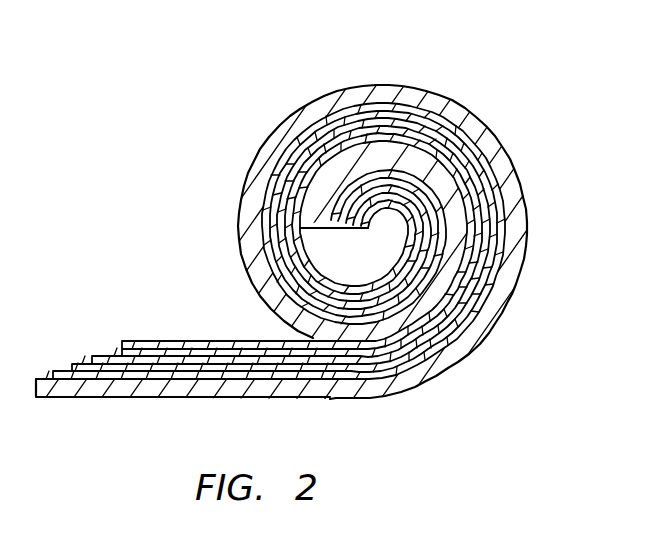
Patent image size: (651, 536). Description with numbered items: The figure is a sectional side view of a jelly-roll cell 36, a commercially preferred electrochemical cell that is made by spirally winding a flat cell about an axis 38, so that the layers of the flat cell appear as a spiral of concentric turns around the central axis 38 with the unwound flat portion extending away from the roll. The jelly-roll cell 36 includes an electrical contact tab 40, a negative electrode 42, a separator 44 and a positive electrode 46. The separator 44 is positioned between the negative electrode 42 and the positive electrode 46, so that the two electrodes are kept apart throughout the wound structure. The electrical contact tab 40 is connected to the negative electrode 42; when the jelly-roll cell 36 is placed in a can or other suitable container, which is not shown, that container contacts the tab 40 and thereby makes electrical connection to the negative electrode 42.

The jelly-roll cell 36 is at (497, 130).
The axis 38 is at (347, 248).
The electrical contact tab 40 is at (286, 166).
The negative electrode 42 is at (334, 136).
The separator 44 is at (392, 112).
The positive electrode 46 is at (505, 246).